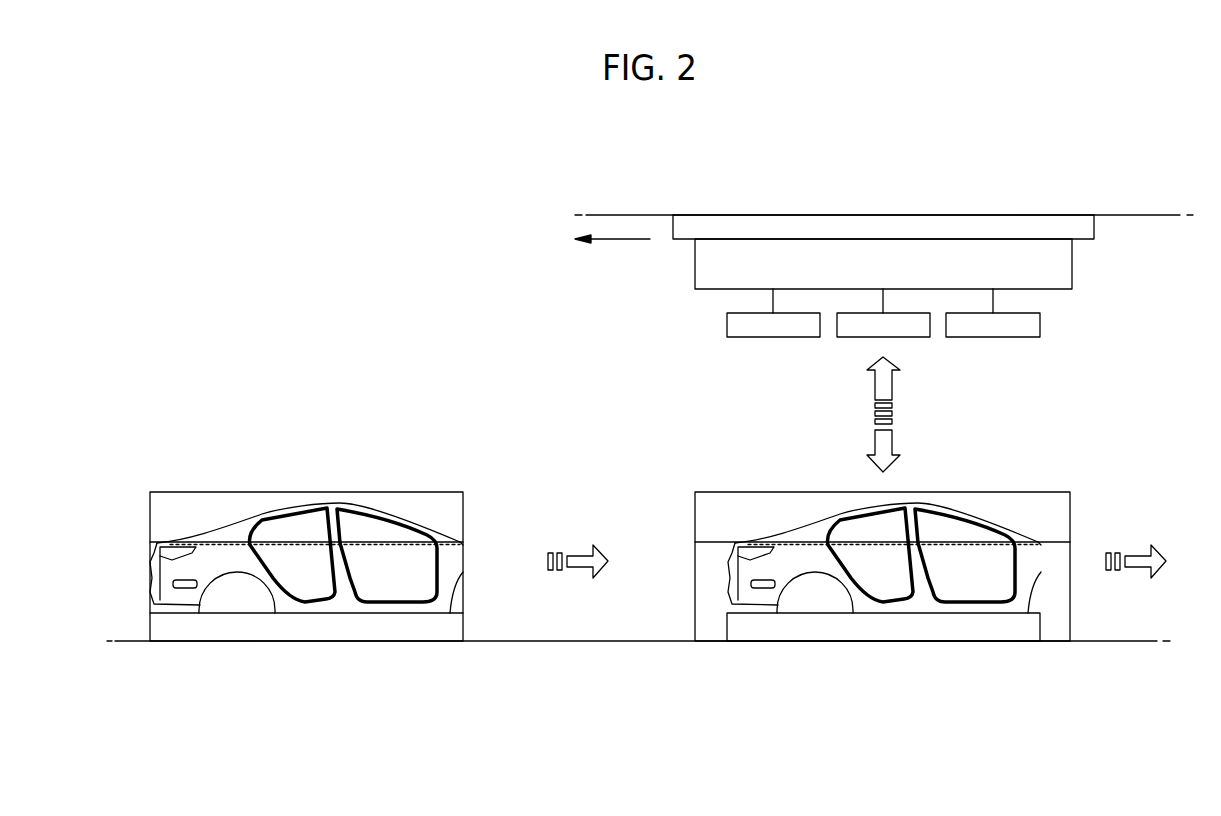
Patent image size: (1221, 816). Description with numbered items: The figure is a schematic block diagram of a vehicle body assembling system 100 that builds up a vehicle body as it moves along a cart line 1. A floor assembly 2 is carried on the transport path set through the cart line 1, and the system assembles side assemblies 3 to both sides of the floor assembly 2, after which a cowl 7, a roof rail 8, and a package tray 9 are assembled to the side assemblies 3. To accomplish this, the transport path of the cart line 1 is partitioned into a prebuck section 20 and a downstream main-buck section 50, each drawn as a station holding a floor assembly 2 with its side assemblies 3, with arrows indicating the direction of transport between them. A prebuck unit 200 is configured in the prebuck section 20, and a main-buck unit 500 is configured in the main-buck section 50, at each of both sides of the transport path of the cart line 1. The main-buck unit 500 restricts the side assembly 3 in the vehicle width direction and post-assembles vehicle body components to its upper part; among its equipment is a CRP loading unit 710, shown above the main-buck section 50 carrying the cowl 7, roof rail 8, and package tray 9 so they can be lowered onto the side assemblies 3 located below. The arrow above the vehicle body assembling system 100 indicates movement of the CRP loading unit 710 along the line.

The vehicle body assembling system 100 is at (669, 170).
The CRP loading unit 710 is at (1072, 263).
The package tray 9 is at (773, 338).
The roof rail 8 is at (918, 338).
The cowl 7 is at (993, 338).
The side assembly 3 is at (327, 503).
The floor assembly 2 is at (305, 628).
The cart line 1 is at (580, 643).
The prebuck section 20 is at (312, 743).
The main-buck section 50 is at (904, 743).
The prebuck unit 200 is at (425, 486).
The main-buck unit 500 is at (1001, 486).